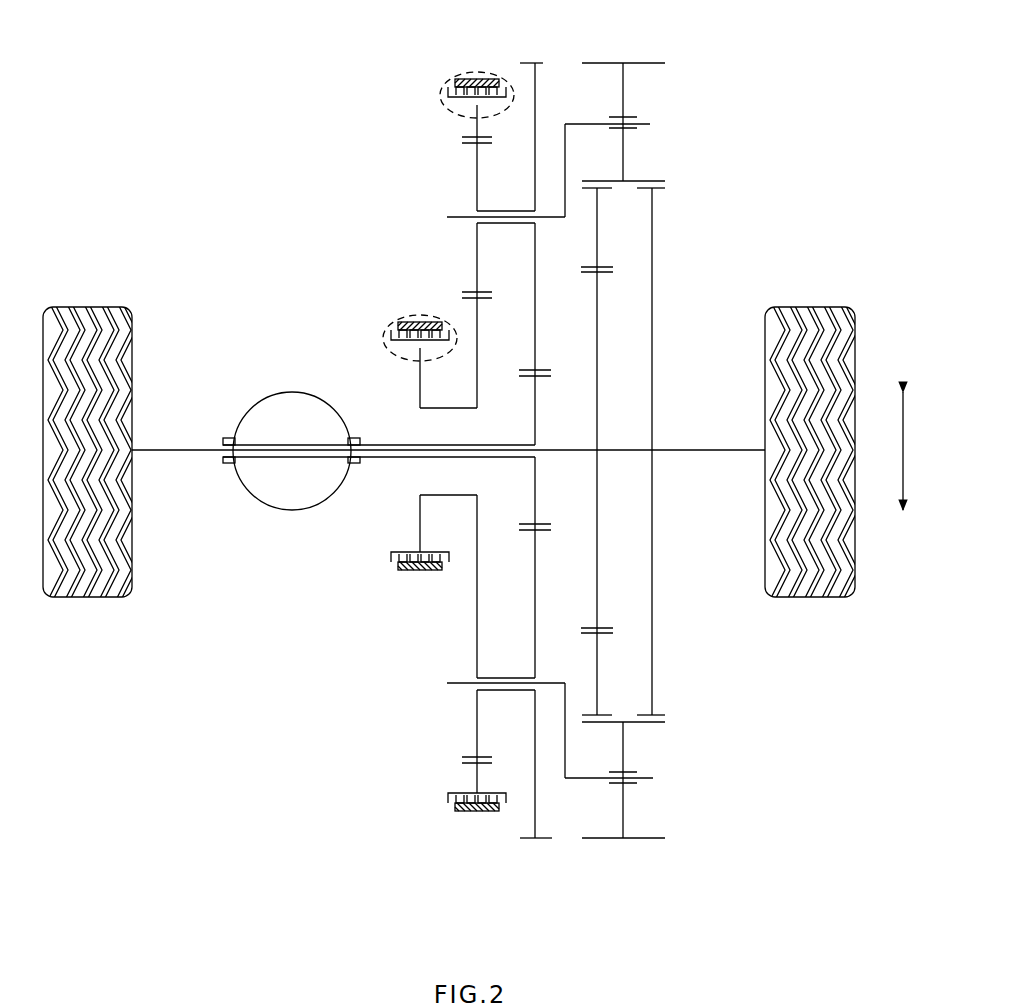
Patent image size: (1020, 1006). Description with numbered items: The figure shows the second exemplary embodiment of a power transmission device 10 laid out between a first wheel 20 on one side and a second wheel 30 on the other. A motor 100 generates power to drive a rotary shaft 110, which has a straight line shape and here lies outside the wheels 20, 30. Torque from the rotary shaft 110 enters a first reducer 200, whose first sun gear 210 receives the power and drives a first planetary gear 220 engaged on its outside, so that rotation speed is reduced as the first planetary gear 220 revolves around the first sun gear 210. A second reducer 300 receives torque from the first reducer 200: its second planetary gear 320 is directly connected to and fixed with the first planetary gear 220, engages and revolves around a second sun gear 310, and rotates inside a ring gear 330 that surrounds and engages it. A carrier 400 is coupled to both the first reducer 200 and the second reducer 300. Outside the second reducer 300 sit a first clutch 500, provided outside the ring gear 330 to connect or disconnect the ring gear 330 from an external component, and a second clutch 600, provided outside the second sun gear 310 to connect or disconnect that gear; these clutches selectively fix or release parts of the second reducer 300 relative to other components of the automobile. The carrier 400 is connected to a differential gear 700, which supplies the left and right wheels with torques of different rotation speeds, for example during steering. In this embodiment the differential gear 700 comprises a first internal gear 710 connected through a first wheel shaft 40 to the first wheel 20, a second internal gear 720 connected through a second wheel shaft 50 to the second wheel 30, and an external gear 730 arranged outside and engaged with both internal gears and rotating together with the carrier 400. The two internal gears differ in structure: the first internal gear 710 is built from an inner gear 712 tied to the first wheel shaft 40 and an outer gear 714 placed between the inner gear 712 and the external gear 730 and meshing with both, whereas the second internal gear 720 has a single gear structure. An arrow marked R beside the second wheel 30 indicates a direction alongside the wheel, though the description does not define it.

The power transmission device 10 is at (72, 26).
The first wheel 20 is at (70, 305).
The second wheel 30 is at (808, 305).
The first wheel shaft 40 is at (170, 452).
The second wheel shaft 50 is at (713, 450).
The motor 100 is at (287, 382).
The rotary shaft 110 is at (378, 445).
The first reducer 200 is at (595, 419).
The first sun gear 210 is at (535, 410).
The first planetary gear 220 is at (537, 110).
The second reducer 300 is at (444, 458).
The second sun gear 310 is at (477, 312).
The second planetary gear 320 is at (477, 180).
The ring gear 330 is at (477, 128).
The carrier 400 is at (565, 168).
The first clutch 500 is at (480, 72).
The second clutch 600 is at (393, 324).
The differential gear 700 is at (657, 450).
The first internal gear 710 is at (606, 566).
The inner gear 712 is at (597, 497).
The outer gear 714 is at (597, 673).
The second internal gear 720 is at (652, 262).
The external gear 730 is at (623, 143).
The rotation direction R is at (905, 450).